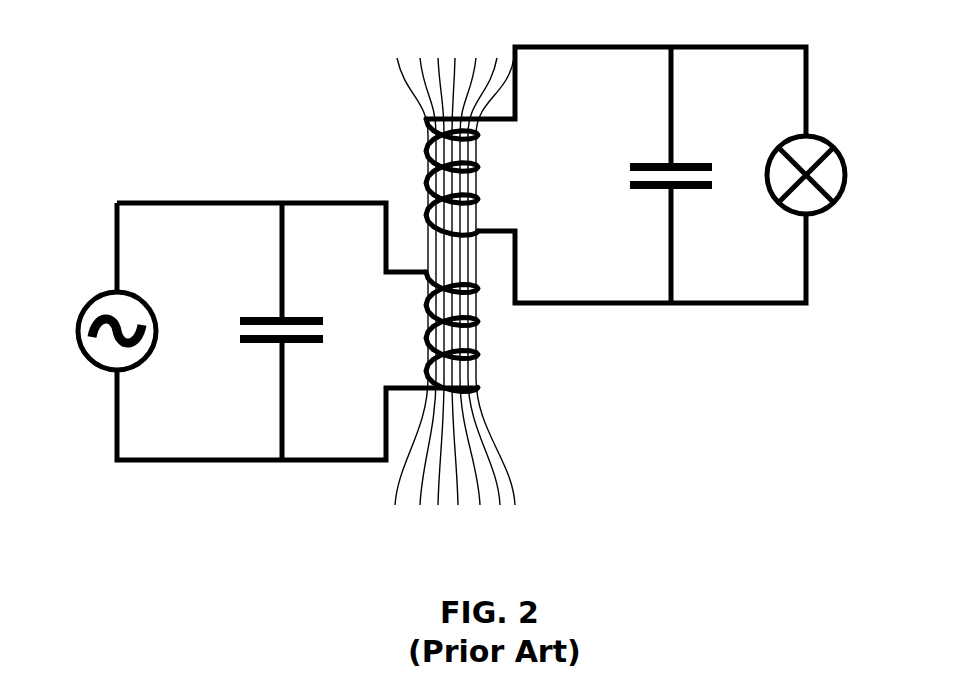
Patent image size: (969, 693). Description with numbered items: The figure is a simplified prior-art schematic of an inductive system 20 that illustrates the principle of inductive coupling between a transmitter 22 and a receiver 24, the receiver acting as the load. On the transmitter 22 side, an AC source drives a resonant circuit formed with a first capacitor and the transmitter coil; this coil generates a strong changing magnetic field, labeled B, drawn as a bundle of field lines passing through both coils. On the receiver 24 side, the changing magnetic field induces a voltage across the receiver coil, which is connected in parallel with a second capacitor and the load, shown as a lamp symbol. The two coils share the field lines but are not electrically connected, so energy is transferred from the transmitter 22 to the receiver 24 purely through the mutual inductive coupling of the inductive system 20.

The inductive system 20 is at (118, 146).
The transmitter 22 is at (232, 482).
The receiver (load) 24 is at (802, 338).